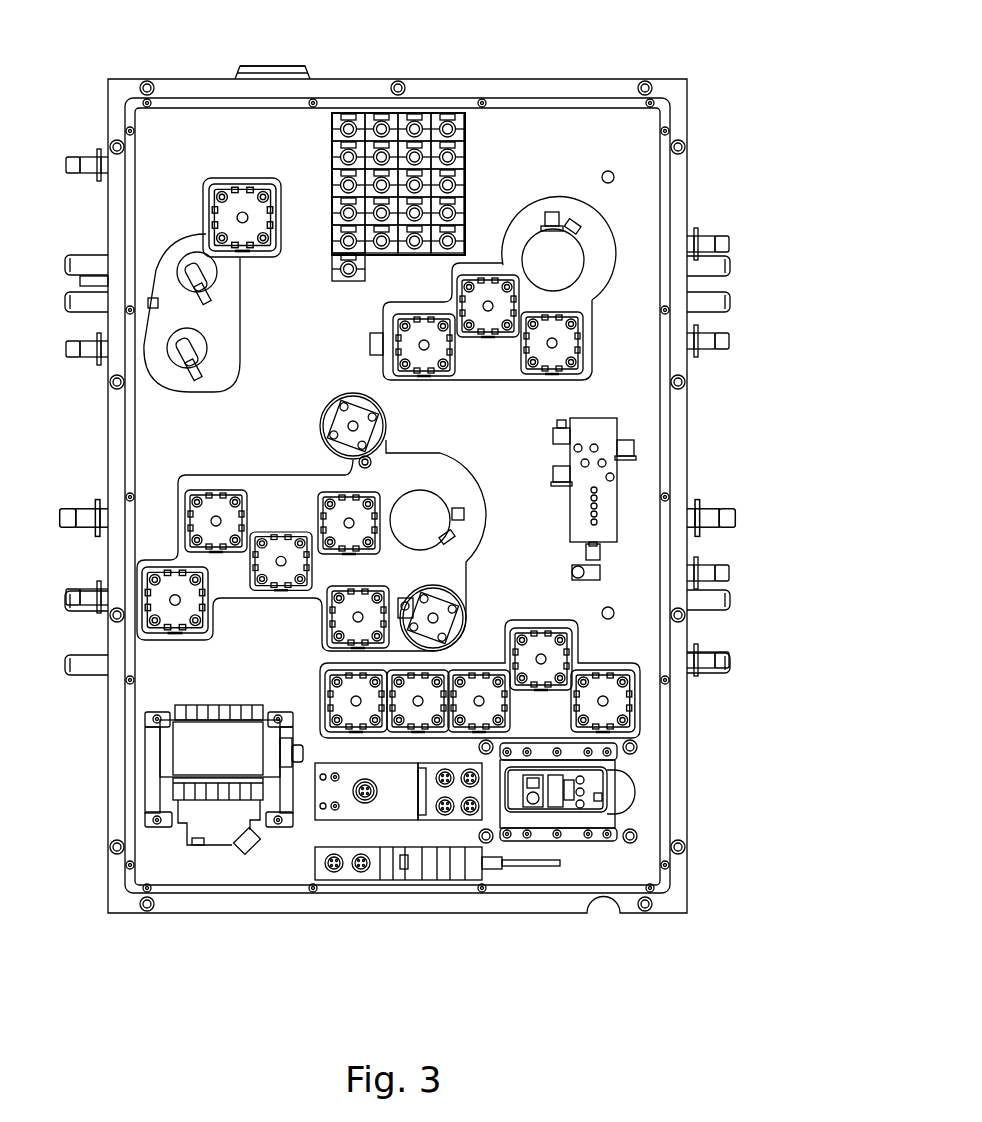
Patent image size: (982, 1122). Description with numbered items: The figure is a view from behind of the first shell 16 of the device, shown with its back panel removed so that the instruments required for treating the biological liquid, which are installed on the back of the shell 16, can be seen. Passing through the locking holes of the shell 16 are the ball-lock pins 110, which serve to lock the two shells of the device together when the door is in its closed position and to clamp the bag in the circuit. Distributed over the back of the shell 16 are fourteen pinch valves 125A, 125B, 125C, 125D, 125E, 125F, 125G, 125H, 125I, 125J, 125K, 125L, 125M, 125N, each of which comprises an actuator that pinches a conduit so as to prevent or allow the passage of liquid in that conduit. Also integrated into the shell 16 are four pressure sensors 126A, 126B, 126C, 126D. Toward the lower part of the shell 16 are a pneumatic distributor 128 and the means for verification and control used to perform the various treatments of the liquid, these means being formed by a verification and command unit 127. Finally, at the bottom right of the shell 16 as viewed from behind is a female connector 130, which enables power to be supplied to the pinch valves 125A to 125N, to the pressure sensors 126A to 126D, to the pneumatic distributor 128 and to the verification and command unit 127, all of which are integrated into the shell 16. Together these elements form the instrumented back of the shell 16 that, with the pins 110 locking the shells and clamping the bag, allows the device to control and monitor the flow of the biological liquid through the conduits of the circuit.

The shell 16 is at (456, 76).
The ball-lock pins 110 is at (352, 410).
The pinch valve 125A is at (487, 285).
The pinch valve 125B is at (536, 366).
The pinch valve 125C is at (406, 367).
The pinch valve 125D is at (345, 490).
The pinch valve 125E is at (218, 492).
The pinch valve 125F is at (275, 582).
The pinch valve 125G is at (337, 638).
The pinch valve 125H is at (538, 640).
The pinch valve 125I is at (600, 685).
The pinch valve 125J is at (485, 720).
The pinch valve 125K is at (437, 720).
The pinch valve 125L is at (337, 696).
The pinch valve 125M is at (185, 622).
The pinch valve 125N is at (243, 198).
The pressure sensor 126A is at (580, 258).
The pressure sensor 126B is at (208, 348).
The pressure sensor 126C is at (422, 500).
The pressure sensor 126D is at (220, 281).
The verification and command unit 127 is at (381, 876).
The pneumatic distributor 128 is at (183, 748).
The female connector 130 is at (605, 786).